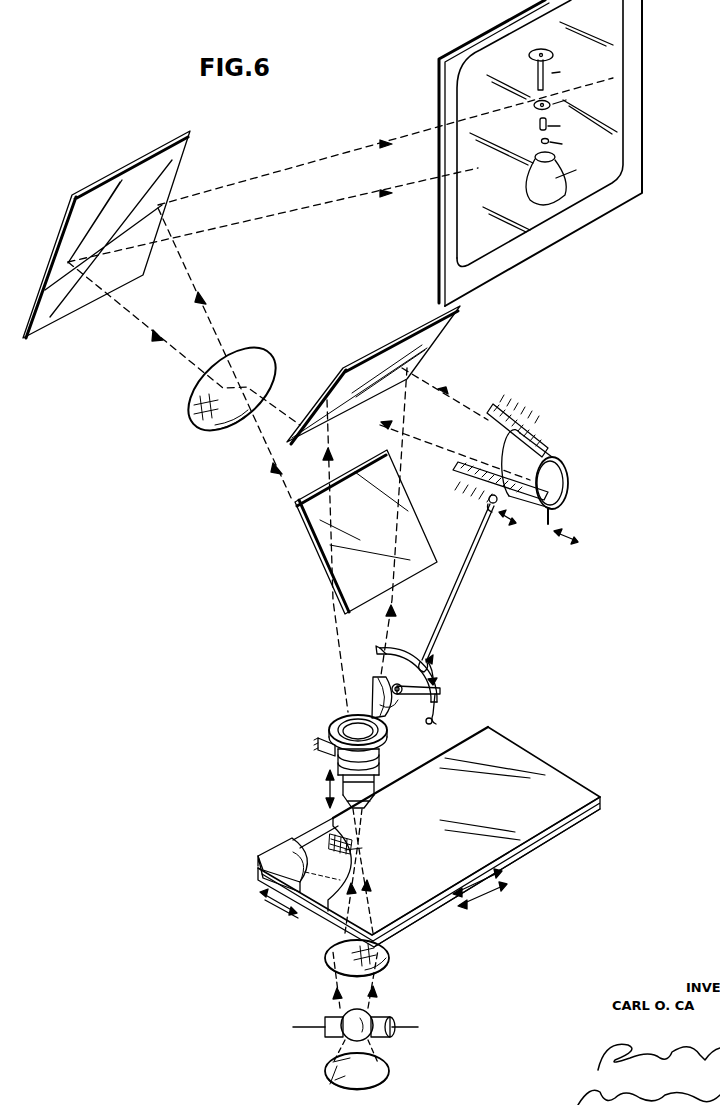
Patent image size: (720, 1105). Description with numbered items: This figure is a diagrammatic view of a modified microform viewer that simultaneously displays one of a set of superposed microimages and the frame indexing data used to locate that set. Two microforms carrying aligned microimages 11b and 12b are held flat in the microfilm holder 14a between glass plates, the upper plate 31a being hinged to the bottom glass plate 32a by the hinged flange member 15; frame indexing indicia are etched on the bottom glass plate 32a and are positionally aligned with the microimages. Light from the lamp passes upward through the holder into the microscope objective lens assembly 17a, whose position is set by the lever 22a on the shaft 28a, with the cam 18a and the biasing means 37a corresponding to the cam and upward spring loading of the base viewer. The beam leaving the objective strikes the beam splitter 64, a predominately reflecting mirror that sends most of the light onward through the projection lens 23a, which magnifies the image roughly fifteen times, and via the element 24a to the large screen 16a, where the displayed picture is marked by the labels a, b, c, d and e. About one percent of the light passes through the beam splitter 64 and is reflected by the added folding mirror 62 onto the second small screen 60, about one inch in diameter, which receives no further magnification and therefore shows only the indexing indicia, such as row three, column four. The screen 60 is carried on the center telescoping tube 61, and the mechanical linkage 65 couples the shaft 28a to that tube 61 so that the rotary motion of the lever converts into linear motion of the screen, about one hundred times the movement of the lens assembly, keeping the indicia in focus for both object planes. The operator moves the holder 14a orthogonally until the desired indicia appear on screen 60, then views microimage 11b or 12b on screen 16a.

The screen 16a is at (642, 62).
The mirror 24a is at (112, 181).
The projection lens 23a is at (268, 368).
The folding mirror 62 is at (427, 348).
The center telescoping tube 61 is at (547, 450).
The second small screen 60 is at (586, 450).
The beam splitter 64 is at (417, 535).
The mechanical linkage 65 is at (462, 585).
The shutter blade 18a is at (378, 690).
The lever 22a is at (436, 692).
The microscope objective lens assembly 17a is at (304, 758).
The shaft 28a is at (402, 695).
The objective mount 37a is at (384, 755).
The microfilm holder 14a is at (572, 758).
The stage rail 31a is at (604, 797).
The bottom glass plate 32a is at (597, 809).
The hinged flange member 15 is at (268, 854).
The microimage 11b is at (360, 837).
The microimage 12b is at (362, 846).
The lamp image a is at (561, 73).
The lens image b is at (565, 100).
The cylinder image c is at (558, 126).
The small element image d is at (561, 144).
The flask image e is at (572, 169).